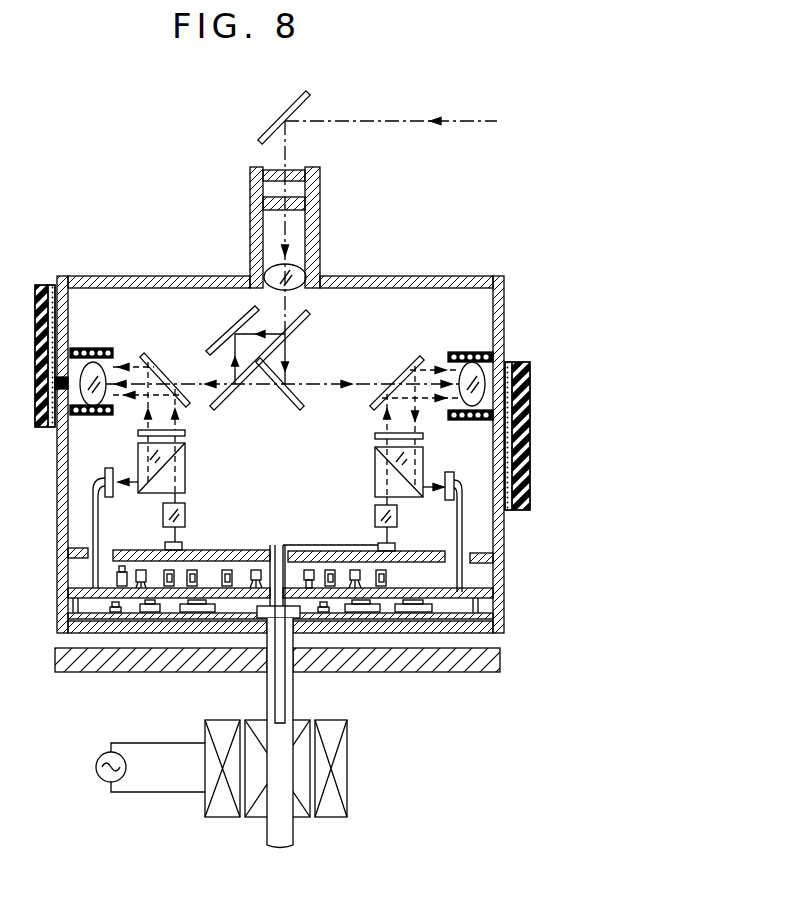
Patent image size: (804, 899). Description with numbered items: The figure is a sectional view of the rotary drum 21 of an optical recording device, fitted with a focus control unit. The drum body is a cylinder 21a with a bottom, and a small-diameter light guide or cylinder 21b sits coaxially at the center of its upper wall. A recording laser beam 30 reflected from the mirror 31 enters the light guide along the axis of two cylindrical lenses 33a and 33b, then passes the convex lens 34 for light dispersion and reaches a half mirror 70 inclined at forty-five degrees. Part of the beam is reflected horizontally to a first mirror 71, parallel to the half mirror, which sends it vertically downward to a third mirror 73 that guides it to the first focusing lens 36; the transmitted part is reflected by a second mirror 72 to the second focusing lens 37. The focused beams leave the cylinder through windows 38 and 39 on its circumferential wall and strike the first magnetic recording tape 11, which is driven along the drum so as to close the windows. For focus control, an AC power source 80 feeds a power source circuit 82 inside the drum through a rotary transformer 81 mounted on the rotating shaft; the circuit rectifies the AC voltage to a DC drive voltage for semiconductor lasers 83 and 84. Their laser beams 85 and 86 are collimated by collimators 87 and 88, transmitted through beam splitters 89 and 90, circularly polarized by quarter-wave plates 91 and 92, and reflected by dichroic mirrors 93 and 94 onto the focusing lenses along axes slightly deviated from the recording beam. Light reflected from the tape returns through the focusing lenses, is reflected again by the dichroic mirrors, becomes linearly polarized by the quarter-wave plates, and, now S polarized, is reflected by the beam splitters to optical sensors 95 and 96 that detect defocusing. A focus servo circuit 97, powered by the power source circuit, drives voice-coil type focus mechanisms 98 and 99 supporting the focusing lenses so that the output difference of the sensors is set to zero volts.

The first magnetic recording tape 11 is at (520, 511).
The rotary drum 21 is at (100, 276).
The cylinder 21a is at (447, 276).
The light guide or cylinder 21b is at (250, 246).
The laser beam 30 is at (470, 121).
The mirror 31 is at (271, 128).
The cylindrical lens 33a is at (300, 170).
The cylindrical lens 33b is at (305, 205).
The convex lens 34 is at (306, 276).
The first focusing lens 36 is at (75, 416).
The second focusing lens 37 is at (481, 367).
The window 38 is at (40, 383).
The window 39 is at (512, 406).
The half mirror 70 is at (302, 326).
The first mirror 71 is at (228, 338).
The second mirror 72 is at (287, 396).
The third mirror 73 is at (243, 388).
The AC power source 80 is at (96, 768).
The rotary transformer 81 is at (205, 818).
The power source circuit 82 is at (448, 610).
The semiconductor laser 83 is at (378, 547).
The semiconductor laser 84 is at (166, 546).
The laser beam 85 is at (395, 546).
The laser beam 86 is at (182, 546).
The collimator 87 is at (375, 515).
The collimator 88 is at (185, 515).
The beam splitter 89 is at (375, 470).
The beam splitter 90 is at (205, 486).
The quarter-wave plate 91 is at (377, 435).
The quarter-wave plate 92 is at (185, 433).
The dichroic mirror 93 is at (392, 379).
The dichroic mirror 94 is at (168, 372).
The optical sensor 95 is at (448, 472).
The optical sensor 96 is at (109, 468).
The focus servo circuit 97 is at (80, 588).
The focus mechanism 98 is at (460, 352).
The focus mechanism 99 is at (93, 348).